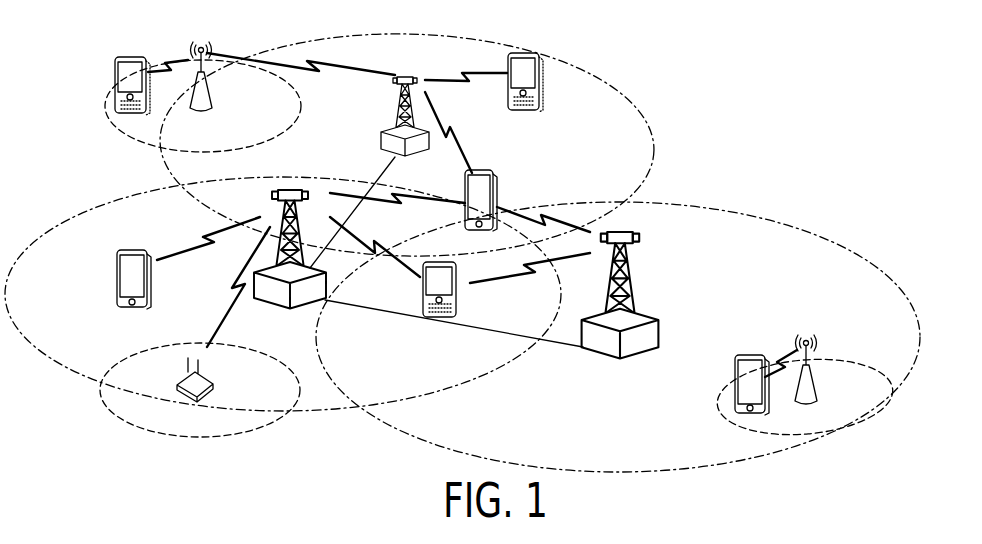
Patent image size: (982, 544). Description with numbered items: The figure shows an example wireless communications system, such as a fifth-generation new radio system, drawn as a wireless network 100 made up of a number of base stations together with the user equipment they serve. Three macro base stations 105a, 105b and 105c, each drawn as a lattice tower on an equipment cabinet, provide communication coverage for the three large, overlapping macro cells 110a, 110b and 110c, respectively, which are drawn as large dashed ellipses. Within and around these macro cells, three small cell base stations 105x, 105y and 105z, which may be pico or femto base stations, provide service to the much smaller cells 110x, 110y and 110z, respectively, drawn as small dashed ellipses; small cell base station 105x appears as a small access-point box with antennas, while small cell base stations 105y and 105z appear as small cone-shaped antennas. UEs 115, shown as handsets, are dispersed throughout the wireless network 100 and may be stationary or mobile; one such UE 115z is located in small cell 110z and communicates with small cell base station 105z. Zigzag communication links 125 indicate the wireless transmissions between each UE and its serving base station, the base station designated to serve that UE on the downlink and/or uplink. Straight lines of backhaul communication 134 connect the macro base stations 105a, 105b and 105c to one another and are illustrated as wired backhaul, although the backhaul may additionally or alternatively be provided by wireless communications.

The wireless network 100 is at (714, 67).
The macro base station 105a is at (280, 303).
The macro base station 105b is at (383, 135).
The macro base station 105c is at (640, 352).
The small cell base station 105x is at (215, 384).
The small cell base station 105y is at (213, 105).
The small cell base station 105z is at (818, 395).
The macro cell 110a is at (85, 210).
The macro cell 110b is at (535, 50).
The macro cell 110c is at (762, 215).
The small cell 110x is at (145, 436).
The small cell 110y is at (136, 134).
The small cell 110z is at (865, 430).
The UE 115 is at (115, 64).
The UE 115z is at (735, 364).
The communication links 125 is at (170, 62).
The backhaul communication 134 is at (382, 158).